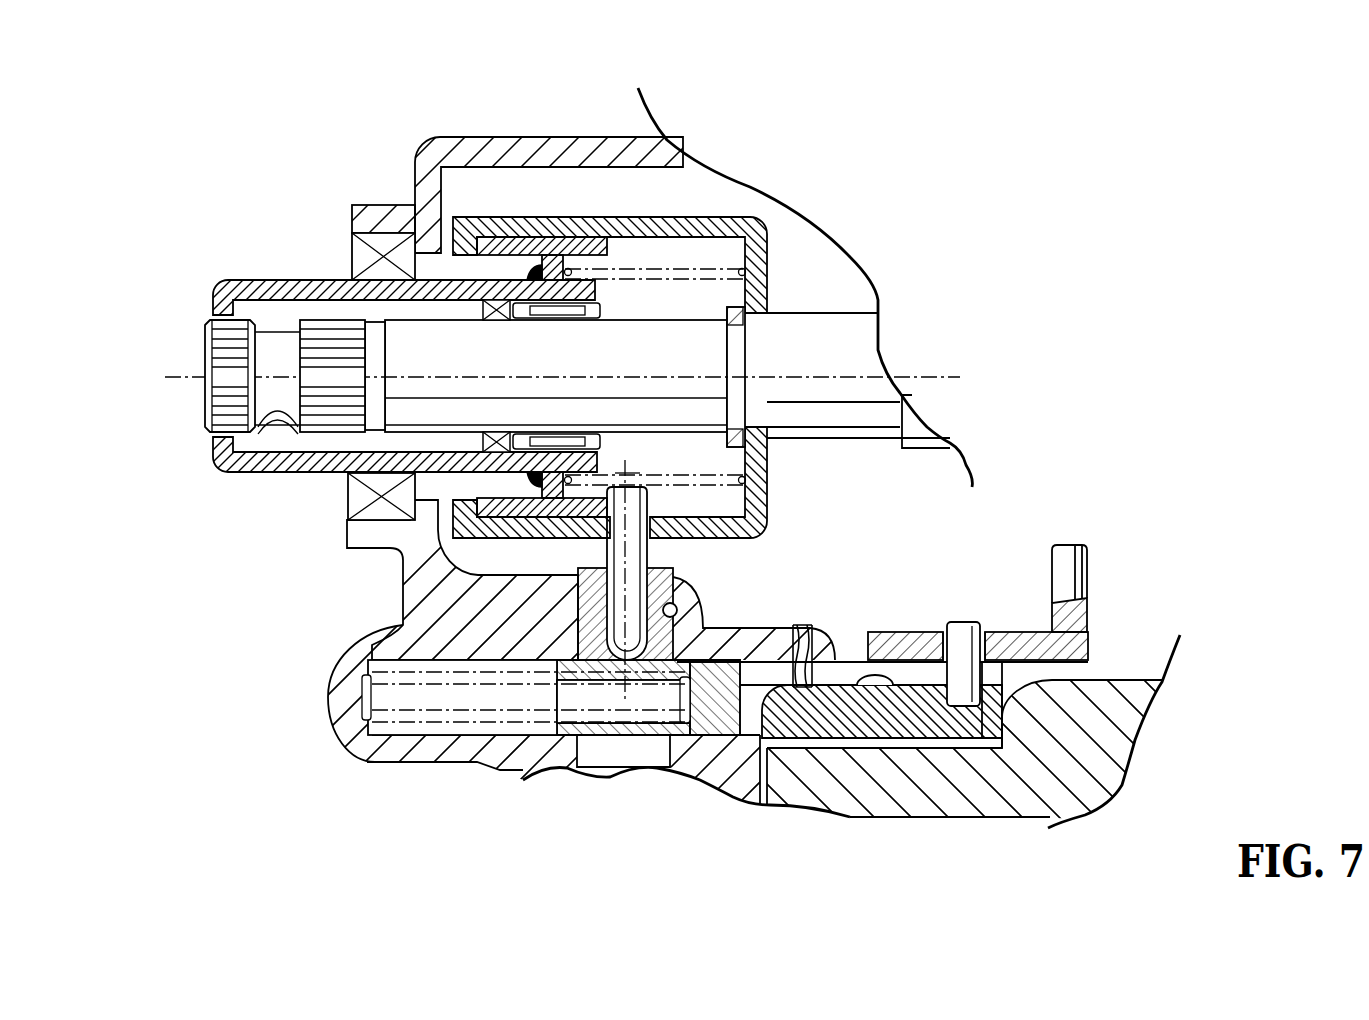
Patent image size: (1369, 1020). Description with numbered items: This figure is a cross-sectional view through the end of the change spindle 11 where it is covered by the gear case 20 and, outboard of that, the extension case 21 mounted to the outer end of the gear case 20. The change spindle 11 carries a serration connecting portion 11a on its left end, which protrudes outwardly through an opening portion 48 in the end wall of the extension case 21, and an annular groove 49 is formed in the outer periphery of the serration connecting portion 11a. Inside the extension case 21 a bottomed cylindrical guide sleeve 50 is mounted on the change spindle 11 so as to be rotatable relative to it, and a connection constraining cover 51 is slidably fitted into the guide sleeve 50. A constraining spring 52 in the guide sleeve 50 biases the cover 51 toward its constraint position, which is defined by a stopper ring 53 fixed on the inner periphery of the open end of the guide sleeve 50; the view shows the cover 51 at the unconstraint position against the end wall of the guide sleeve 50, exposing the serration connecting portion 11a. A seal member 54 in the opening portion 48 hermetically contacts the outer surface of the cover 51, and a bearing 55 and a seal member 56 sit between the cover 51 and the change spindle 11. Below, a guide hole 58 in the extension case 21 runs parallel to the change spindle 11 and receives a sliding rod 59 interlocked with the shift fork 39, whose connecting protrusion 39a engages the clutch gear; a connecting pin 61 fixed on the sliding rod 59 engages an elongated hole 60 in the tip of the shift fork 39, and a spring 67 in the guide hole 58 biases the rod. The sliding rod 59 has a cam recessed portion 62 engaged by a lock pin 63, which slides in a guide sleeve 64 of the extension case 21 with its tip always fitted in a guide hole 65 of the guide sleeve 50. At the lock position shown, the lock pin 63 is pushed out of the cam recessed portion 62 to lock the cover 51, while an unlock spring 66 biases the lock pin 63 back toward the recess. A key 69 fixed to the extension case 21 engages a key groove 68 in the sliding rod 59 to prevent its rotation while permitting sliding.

The change spindle 11 is at (857, 350).
The serration connecting portion 11a is at (217, 348).
The gear case 20 is at (1110, 738).
The extension case 21 is at (523, 137).
The shift fork 39 is at (1075, 645).
The connecting protrusion 39a is at (1078, 562).
The opening portion 48 is at (350, 248).
The annular groove 49 is at (275, 335).
The guide sleeve 50 is at (695, 225).
The connection constraining cover 51 is at (257, 470).
The constraining spring 52 is at (750, 268).
The stopper ring 53 is at (467, 228).
The seal member 54 is at (390, 238).
The bearing 55 is at (560, 313).
The seal member 56 is at (495, 320).
The guide hole 58 is at (443, 710).
The sliding rod 59 is at (917, 727).
The elongated hole 60 is at (970, 623).
The connecting pin 61 is at (960, 632).
The cam recessed portion 62 is at (712, 773).
The lock pin 63 is at (637, 553).
The guide sleeve 64 is at (698, 622).
The guide hole 65 is at (640, 493).
The unlock spring 66 is at (590, 568).
The spring 67 is at (357, 743).
The key groove 68 is at (852, 690).
The key 69 is at (800, 627).